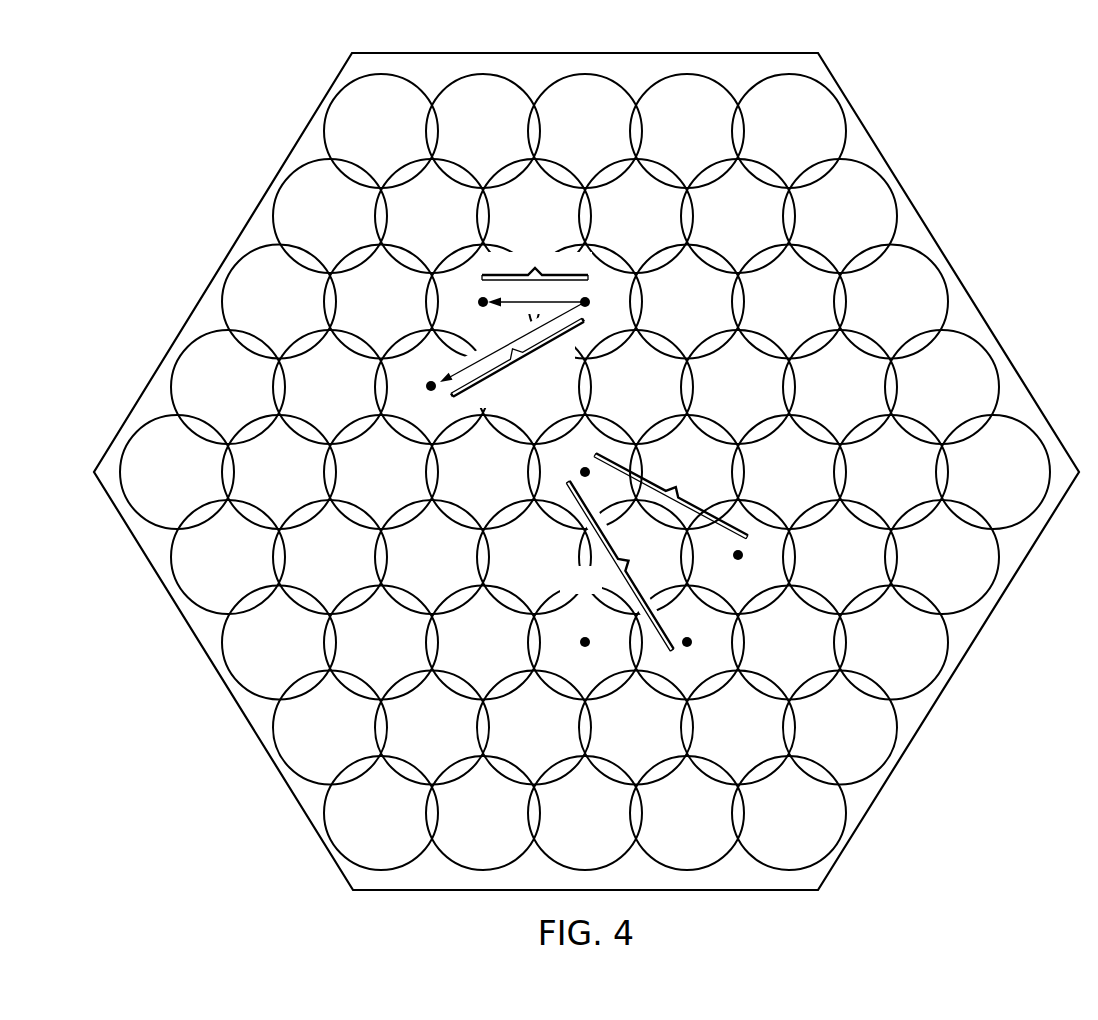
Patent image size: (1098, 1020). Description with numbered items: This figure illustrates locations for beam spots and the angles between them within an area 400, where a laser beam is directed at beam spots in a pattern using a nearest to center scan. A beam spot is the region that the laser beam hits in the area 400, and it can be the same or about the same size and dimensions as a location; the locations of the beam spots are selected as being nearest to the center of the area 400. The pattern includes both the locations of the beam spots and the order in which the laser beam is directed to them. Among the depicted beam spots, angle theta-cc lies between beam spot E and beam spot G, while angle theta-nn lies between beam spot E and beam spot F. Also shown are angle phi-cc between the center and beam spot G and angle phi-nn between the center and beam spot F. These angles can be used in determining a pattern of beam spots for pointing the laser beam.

The area 400 is at (222, 84).
The beam spot E is at (595, 483).
The beam spot F is at (573, 483).
The beam spot G is at (587, 471).